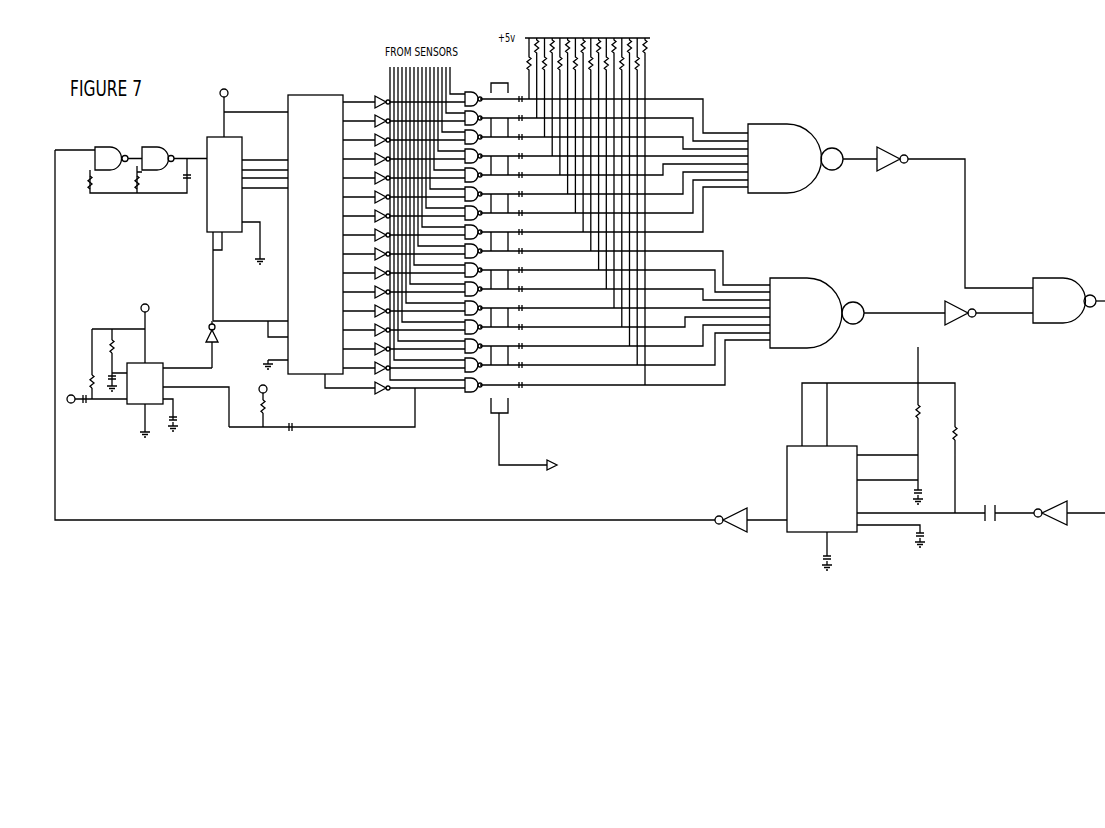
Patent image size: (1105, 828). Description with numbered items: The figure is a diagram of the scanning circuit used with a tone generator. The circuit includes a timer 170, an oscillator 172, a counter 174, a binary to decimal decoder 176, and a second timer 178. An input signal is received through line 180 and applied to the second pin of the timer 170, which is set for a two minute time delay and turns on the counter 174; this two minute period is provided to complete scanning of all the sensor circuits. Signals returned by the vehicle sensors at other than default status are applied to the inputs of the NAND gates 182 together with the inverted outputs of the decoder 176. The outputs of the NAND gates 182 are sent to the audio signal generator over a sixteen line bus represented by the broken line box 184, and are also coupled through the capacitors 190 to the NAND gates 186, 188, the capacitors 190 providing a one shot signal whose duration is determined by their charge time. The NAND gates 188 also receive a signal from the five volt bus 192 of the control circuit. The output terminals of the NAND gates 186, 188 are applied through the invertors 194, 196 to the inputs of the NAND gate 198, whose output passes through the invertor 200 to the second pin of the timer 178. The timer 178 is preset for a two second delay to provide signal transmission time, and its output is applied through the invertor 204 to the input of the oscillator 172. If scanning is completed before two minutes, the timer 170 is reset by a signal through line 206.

The timer 170 is at (140, 393).
The oscillator 172 is at (115, 182).
The counter 174 is at (215, 150).
The binary to decimal decoder 176 is at (310, 113).
The timer 178 is at (802, 473).
The line 180 is at (72, 403).
The NAND gates 182 is at (463, 392).
The broken line box 184 is at (494, 409).
The NAND gate 186 is at (782, 148).
The NAND gate 188 is at (793, 300).
The capacitors 190 is at (536, 391).
The 5 volt bus 192 is at (650, 38).
The invertor 194 is at (890, 150).
The invertor 196 is at (950, 302).
The NAND gate 198 is at (1055, 293).
The invertor 200 is at (1053, 507).
The invertor 204 is at (742, 513).
The line 206 is at (247, 427).